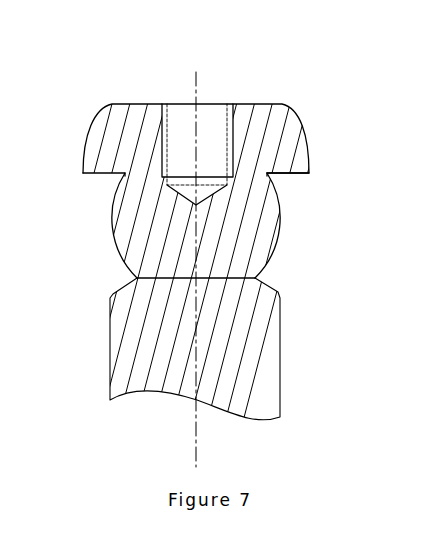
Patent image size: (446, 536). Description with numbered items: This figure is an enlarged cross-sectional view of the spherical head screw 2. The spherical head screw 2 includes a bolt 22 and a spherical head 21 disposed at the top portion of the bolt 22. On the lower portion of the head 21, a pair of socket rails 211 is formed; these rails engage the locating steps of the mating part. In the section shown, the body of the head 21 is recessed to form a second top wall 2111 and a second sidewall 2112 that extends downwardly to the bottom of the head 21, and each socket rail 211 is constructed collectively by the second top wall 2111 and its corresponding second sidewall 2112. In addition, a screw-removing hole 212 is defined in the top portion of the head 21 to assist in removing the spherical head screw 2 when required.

The spherical head screw 2 is at (209, 248).
The spherical head 21 is at (203, 229).
The socket rail 211 is at (212, 142).
The second top wall 2111 is at (293, 175).
The second sidewall 2112 is at (278, 222).
The screw-removing hole 212 is at (183, 127).
The bolt 22 is at (143, 373).